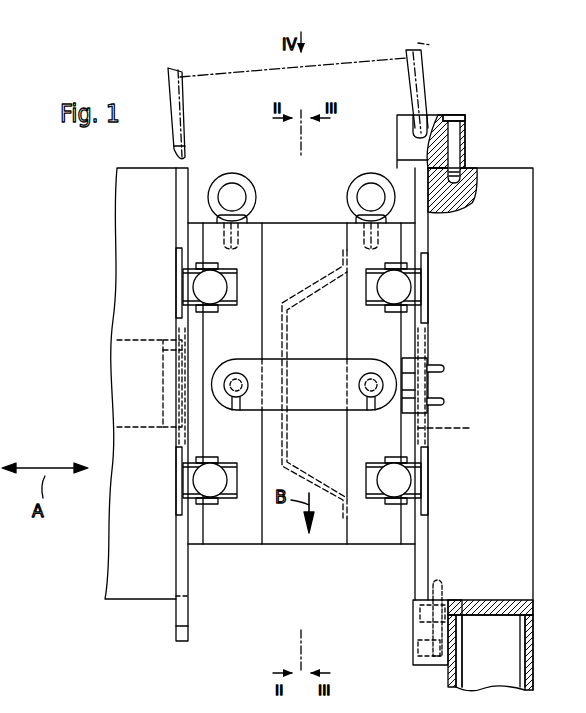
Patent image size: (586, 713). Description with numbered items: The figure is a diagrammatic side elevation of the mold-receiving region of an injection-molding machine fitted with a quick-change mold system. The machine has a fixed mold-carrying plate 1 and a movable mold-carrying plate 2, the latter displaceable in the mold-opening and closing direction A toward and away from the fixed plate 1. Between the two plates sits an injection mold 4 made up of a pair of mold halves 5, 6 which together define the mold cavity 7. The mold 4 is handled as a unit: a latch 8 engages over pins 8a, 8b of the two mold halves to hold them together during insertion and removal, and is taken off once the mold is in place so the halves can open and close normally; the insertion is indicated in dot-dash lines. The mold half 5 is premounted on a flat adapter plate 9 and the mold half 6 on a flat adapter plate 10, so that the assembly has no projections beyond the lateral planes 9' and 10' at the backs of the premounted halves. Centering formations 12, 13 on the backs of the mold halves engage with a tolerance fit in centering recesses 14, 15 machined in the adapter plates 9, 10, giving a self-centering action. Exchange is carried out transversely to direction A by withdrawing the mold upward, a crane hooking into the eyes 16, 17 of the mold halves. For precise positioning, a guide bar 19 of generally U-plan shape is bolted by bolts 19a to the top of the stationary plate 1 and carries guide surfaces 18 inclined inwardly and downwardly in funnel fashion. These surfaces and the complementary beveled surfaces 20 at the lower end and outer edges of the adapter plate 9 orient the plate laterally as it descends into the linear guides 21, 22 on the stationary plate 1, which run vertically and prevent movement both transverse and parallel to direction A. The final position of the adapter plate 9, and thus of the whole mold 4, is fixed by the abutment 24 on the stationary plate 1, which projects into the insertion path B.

The fixed mold-carrying plate 1 is at (523, 236).
The movable mold-carrying plate 2 is at (132, 268).
The injection mold 4 is at (228, 80).
The mold half 5 is at (333, 530).
The mold half 6 is at (198, 533).
The mold cavity 7 is at (292, 292).
The latch 8 is at (311, 348).
The pin 8a is at (236, 410).
The pin 8b is at (371, 410).
The adapter plate 9 is at (420, 325).
The lateral plane 9' is at (443, 33).
The adapter plate 10 is at (199, 404).
The lateral plane 10' is at (153, 96).
The centering formation 12 is at (421, 352).
The centering formation 13 is at (182, 362).
The centering recess 14 is at (421, 340).
The centering recess 15 is at (177, 337).
The eye 16 is at (358, 192).
The eye 17 is at (245, 187).
The guide surface 18 is at (428, 113).
The guide bar 19 is at (450, 148).
The bolt 19a is at (456, 130).
The beveled surface 20 is at (418, 133).
The linear guide 21 is at (428, 395).
The linear guide 22 is at (413, 620).
The abutment 24 is at (421, 665).